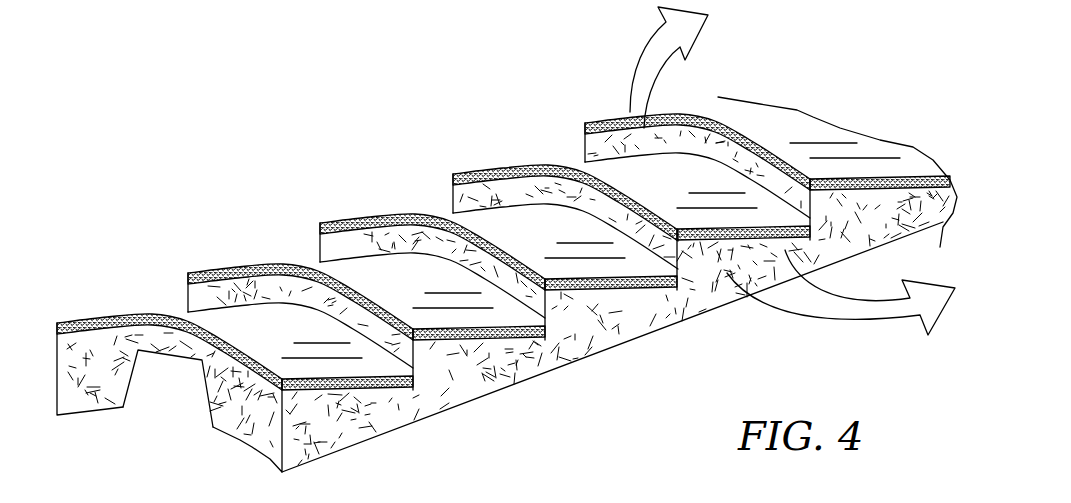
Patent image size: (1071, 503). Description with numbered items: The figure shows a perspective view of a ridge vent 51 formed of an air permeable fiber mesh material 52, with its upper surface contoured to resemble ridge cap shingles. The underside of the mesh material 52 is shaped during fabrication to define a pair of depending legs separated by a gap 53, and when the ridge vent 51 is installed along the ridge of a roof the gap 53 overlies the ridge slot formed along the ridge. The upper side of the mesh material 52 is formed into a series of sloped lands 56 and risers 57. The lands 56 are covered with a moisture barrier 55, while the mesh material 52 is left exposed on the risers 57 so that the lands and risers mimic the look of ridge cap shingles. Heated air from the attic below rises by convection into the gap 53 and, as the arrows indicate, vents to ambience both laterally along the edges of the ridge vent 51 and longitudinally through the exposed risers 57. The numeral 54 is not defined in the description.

The ridge vent 51 is at (507, 239).
The air permeable fiber mesh material 52 is at (407, 397).
The gap 53 is at (138, 380).
The segment 54 is at (204, 261).
The moisture barrier 55 is at (607, 283).
The sloped lands 56 is at (317, 270).
The risers 57 is at (356, 318).